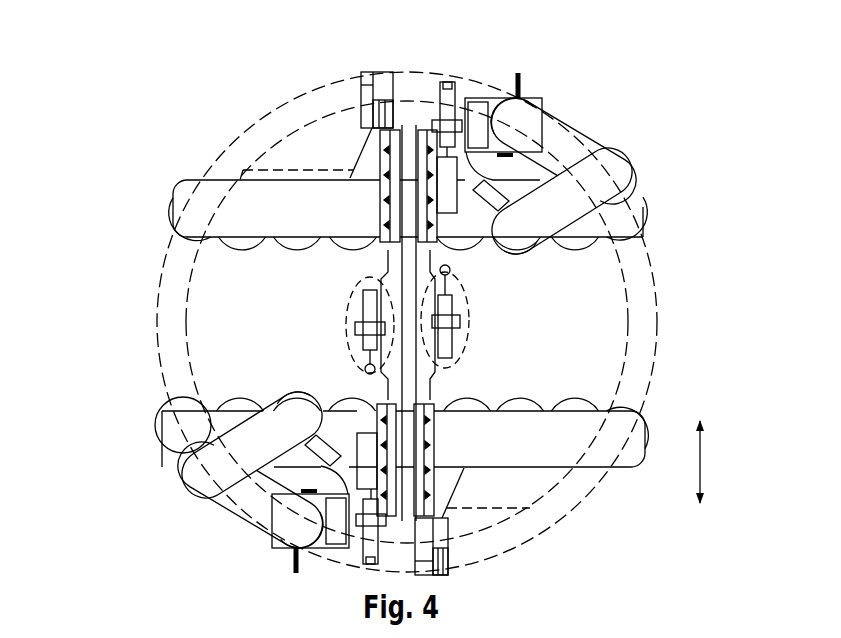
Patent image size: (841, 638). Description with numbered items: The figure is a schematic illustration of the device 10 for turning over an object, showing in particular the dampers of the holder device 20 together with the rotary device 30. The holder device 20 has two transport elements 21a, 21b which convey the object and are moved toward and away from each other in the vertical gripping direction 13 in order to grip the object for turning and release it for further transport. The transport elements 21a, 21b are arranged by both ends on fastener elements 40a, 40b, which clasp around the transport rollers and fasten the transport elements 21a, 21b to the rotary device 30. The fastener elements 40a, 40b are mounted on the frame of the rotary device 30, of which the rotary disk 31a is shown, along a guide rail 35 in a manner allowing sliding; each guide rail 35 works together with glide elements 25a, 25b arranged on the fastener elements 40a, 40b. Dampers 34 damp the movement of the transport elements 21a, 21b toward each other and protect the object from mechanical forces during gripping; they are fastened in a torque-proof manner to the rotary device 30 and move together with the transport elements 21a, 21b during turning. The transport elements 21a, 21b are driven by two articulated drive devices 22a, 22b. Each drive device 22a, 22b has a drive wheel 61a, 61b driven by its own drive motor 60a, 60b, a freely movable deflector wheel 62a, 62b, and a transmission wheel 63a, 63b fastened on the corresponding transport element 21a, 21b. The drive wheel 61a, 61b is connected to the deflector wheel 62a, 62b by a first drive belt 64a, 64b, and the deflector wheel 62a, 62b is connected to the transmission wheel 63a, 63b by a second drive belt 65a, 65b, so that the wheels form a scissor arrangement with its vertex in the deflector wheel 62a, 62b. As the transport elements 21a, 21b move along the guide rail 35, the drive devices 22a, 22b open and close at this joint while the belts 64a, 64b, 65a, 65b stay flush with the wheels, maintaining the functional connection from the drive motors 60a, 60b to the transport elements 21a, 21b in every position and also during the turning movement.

The device 10 is at (221, 94).
The gripping direction 13 is at (717, 462).
The holder device 20 is at (643, 462).
The transport element 21a is at (158, 228).
The transport element 21b is at (155, 385).
The drive device 22a is at (636, 144).
The drive device 22b is at (185, 473).
The glide element 25a is at (387, 210).
The glide element 25b is at (405, 432).
The rotary device 30 is at (661, 316).
The rotary disk 31a is at (640, 368).
The damper 34 is at (363, 300).
The guide rail 35 is at (400, 262).
The fastener element 40a is at (325, 222).
The fastener element 40b is at (540, 449).
The drive motor 60a is at (526, 118).
The drive motor 60b is at (289, 553).
The drive wheel 61a is at (541, 99).
The drive wheel 61b is at (284, 546).
The deflector wheel 62a is at (596, 156).
The deflector wheel 62b is at (222, 470).
The transmission wheel 63a is at (638, 226).
The transmission wheel 63b is at (303, 423).
The first drive belt 64a is at (607, 177).
The first drive belt 64b is at (293, 528).
The second drive belt 65a is at (523, 236).
The second drive belt 65b is at (203, 410).